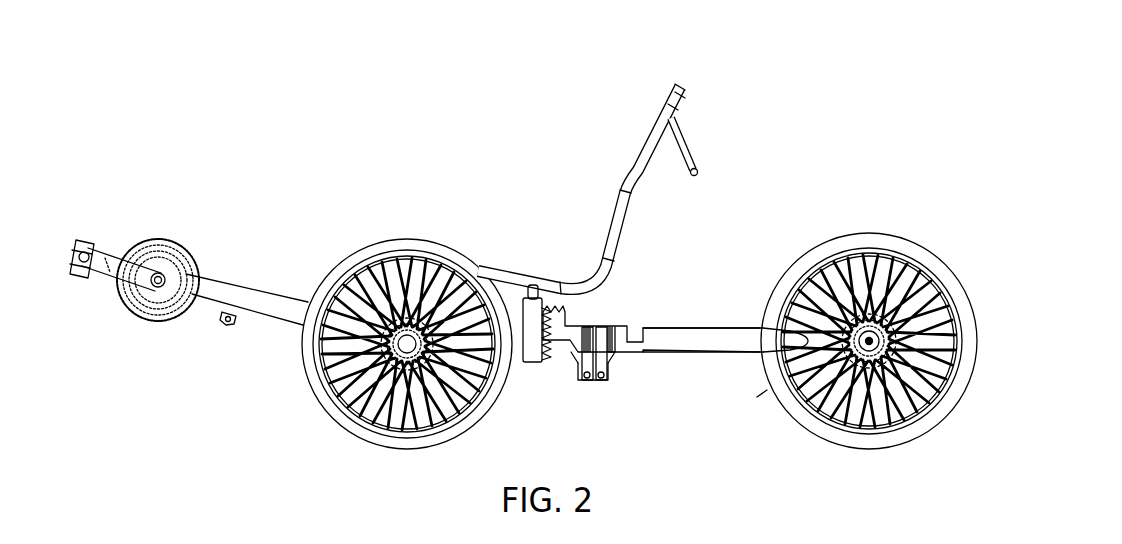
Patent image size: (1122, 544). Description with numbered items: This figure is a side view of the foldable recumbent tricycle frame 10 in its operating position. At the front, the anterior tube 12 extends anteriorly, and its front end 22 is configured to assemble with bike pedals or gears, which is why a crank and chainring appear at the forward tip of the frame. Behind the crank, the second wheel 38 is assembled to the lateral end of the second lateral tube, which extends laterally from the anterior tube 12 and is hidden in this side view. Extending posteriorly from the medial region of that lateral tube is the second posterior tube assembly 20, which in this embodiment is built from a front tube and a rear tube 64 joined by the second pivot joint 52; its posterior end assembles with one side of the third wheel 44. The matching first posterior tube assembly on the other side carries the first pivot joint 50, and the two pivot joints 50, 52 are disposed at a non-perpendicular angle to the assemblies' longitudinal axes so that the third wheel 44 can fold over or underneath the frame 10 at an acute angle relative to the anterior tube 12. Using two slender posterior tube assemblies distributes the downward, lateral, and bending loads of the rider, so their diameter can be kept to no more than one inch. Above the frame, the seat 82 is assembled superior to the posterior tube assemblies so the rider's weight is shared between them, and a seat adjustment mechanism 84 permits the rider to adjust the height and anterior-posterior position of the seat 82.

The tricycle frame 10 is at (213, 372).
The anterior tube 12 is at (260, 271).
The second posterior tube assembly 20 is at (700, 373).
The front end 22 is at (190, 288).
The second wheel 38 is at (388, 238).
The third wheel 44 is at (875, 233).
The first pivot joint 50 is at (565, 370).
The second pivot joint 52 is at (617, 365).
The rear tube 64 is at (698, 328).
The seat 82 is at (635, 167).
The seat adjustment mechanism 84 is at (523, 367).